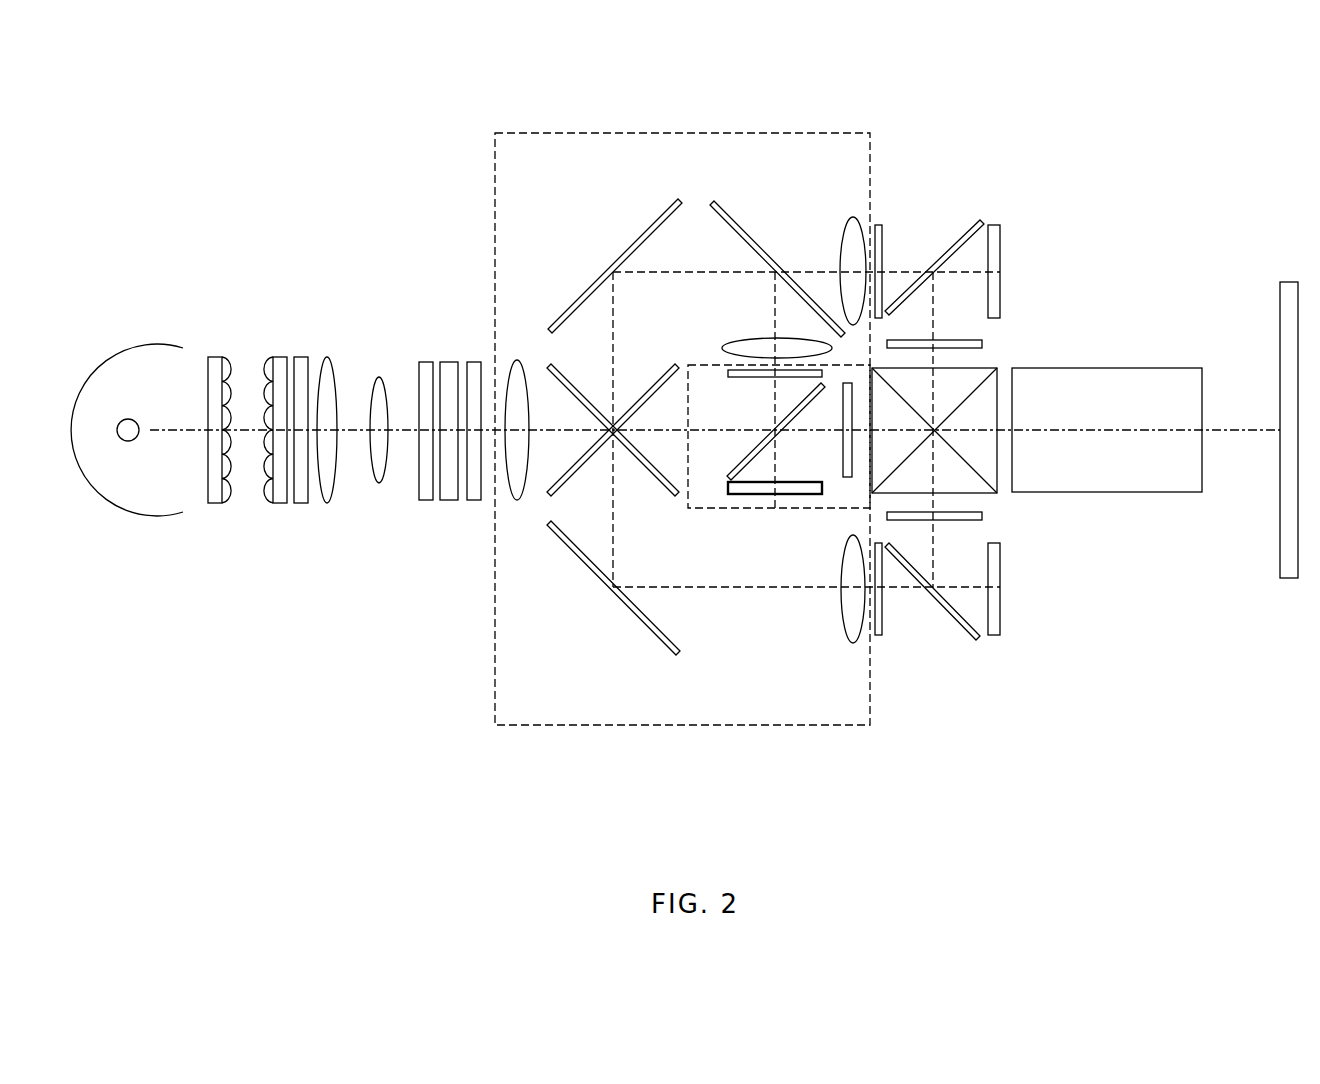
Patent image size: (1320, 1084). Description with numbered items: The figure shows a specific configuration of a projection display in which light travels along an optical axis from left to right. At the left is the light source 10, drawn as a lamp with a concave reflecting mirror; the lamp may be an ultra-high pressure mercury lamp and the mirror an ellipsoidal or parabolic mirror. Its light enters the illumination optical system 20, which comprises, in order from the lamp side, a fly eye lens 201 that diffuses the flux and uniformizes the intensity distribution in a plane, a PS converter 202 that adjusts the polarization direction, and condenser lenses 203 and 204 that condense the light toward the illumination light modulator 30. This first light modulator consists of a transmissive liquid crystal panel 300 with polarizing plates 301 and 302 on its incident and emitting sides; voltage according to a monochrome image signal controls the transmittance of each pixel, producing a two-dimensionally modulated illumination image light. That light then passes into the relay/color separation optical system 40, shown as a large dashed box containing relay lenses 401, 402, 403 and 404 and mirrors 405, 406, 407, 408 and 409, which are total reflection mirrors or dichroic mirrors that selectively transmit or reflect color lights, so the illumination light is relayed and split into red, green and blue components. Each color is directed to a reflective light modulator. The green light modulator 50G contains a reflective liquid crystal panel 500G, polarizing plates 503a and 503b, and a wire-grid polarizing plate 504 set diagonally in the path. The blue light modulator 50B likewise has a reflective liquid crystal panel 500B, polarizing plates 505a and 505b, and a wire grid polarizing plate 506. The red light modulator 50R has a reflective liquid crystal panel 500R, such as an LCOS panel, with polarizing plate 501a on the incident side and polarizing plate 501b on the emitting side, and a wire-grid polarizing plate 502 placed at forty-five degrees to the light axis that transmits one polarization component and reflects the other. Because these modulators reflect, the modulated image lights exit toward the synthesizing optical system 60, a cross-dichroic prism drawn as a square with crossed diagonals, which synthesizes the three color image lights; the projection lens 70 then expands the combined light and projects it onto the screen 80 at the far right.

The light source 10 is at (150, 348).
The illumination optical system 20 is at (208, 252).
The fly eye lens 201 is at (287, 348).
The PS converter 202 is at (300, 357).
The condenser lens 203 is at (327, 357).
The condenser lens 204 is at (379, 377).
The illumination light modulator 30 is at (480, 252).
The transmissive liquid crystal panel 300 is at (449, 362).
The polarizing plate 301 is at (426, 362).
The polarizing plate 302 is at (474, 362).
The relay/color separation optical system 40 is at (553, 728).
The relay lens 401 is at (517, 360).
The relay lens 402 is at (853, 643).
The relay lens 403 is at (723, 350).
The relay lens 404 is at (857, 218).
The mirror 405 is at (653, 475).
The mirror 406 is at (653, 385).
The mirror 407 is at (653, 640).
The mirror 408 is at (655, 222).
The mirror 409 is at (733, 220).
The green light modulator 50G is at (655, 824).
The polarizing plate 503a is at (728, 374).
The wire-grid polarizing plate 504 is at (730, 478).
The reflective liquid crystal panel 500G is at (765, 495).
The polarizing plate 503b is at (847, 478).
The blue light modulator 50B is at (1089, 125).
The polarizing plate 505a is at (878, 222).
The wire grid polarizing plate 506 is at (980, 220).
The reflective liquid crystal panel 500B is at (1002, 237).
The polarizing plate 505b is at (983, 343).
The red light modulator 50R is at (1089, 550).
The polarizing plate 501a is at (878, 638).
The wire-grid polarizing plate 502 is at (978, 640).
The reflective liquid crystal panel 500R is at (1002, 610).
The polarizing plate 501b is at (983, 517).
The synthesizing optical system 60 is at (980, 368).
The projection lens 70 is at (1160, 368).
The screen 80 is at (1288, 282).